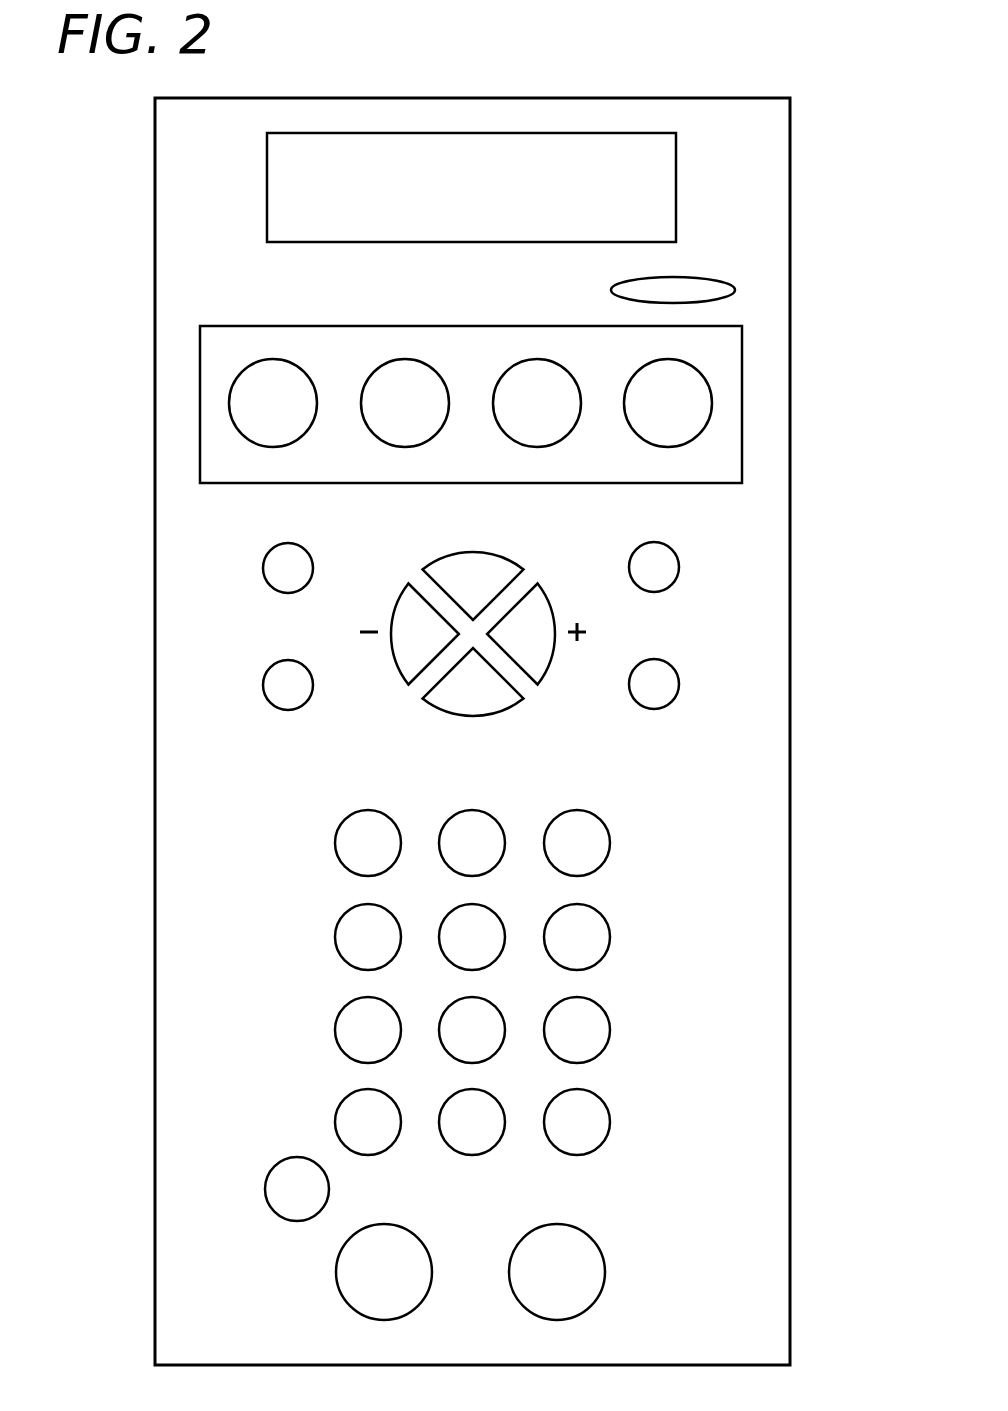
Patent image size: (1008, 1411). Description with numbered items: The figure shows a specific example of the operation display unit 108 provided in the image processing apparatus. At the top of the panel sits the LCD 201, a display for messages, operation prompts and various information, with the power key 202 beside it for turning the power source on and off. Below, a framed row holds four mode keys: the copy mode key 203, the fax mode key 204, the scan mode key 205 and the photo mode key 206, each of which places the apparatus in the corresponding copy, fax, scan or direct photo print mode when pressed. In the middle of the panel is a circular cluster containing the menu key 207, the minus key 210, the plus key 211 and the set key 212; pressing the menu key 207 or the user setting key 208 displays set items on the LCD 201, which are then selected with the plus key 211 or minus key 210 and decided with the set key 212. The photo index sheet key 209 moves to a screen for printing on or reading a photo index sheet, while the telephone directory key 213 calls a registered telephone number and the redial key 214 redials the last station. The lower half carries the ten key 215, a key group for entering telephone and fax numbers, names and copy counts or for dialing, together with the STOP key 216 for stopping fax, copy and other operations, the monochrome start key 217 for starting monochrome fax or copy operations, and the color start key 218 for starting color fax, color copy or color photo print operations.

The operation display unit 108 is at (700, 98).
The LCD 201 is at (676, 172).
The power key 202 is at (735, 290).
The copy mode key 203 is at (229, 402).
The fax mode key 204 is at (380, 366).
The scan mode key 205 is at (558, 363).
The photo mode key 206 is at (712, 400).
The menu key 207 is at (498, 570).
The user setting key 208 is at (263, 570).
The photo index sheet key 209 is at (680, 566).
The minus key 210 is at (398, 608).
The plus key 211 is at (542, 613).
The set key 212 is at (453, 697).
The telephone directory key 213 is at (263, 688).
The redial key 214 is at (680, 684).
The ten key 215 is at (622, 890).
The STOP key 216 is at (264, 1180).
The monochrome start key 217 is at (336, 1272).
The color start key 218 is at (606, 1268).